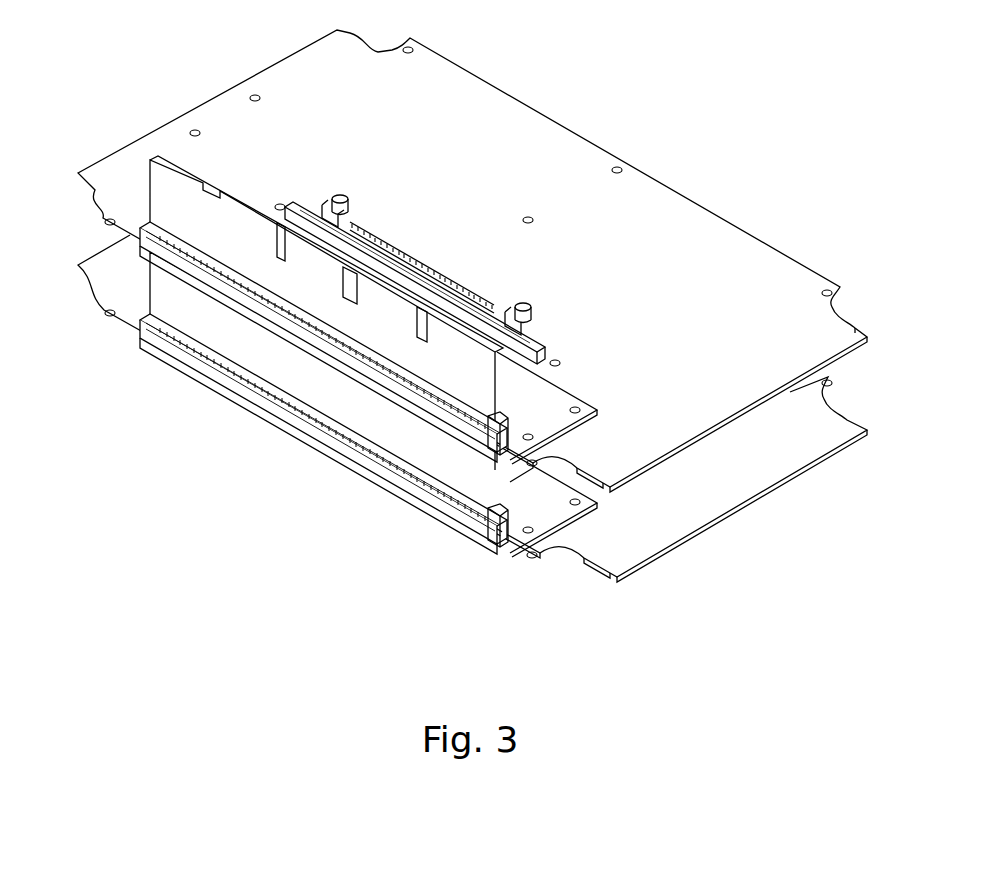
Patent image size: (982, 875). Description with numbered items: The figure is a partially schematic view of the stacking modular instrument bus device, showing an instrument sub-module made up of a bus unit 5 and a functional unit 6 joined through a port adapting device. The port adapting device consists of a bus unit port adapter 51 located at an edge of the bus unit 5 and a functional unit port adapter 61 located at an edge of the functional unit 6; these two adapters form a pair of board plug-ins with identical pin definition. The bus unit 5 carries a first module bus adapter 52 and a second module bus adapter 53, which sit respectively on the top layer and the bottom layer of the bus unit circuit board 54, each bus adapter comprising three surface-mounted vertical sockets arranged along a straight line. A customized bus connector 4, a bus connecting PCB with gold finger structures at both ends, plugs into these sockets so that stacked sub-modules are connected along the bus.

The customized bus connector 4 is at (155, 298).
The bus unit of instrument sub-module 5 is at (547, 508).
The functional unit of instrument sub-module 6 is at (723, 487).
The bus unit port adapter 51 is at (325, 237).
The first module bus adapter 52 is at (360, 353).
The second module bus adapter 53 is at (370, 487).
The bus unit circuit board 54 is at (477, 538).
The functional unit port adapter 61 is at (405, 265).